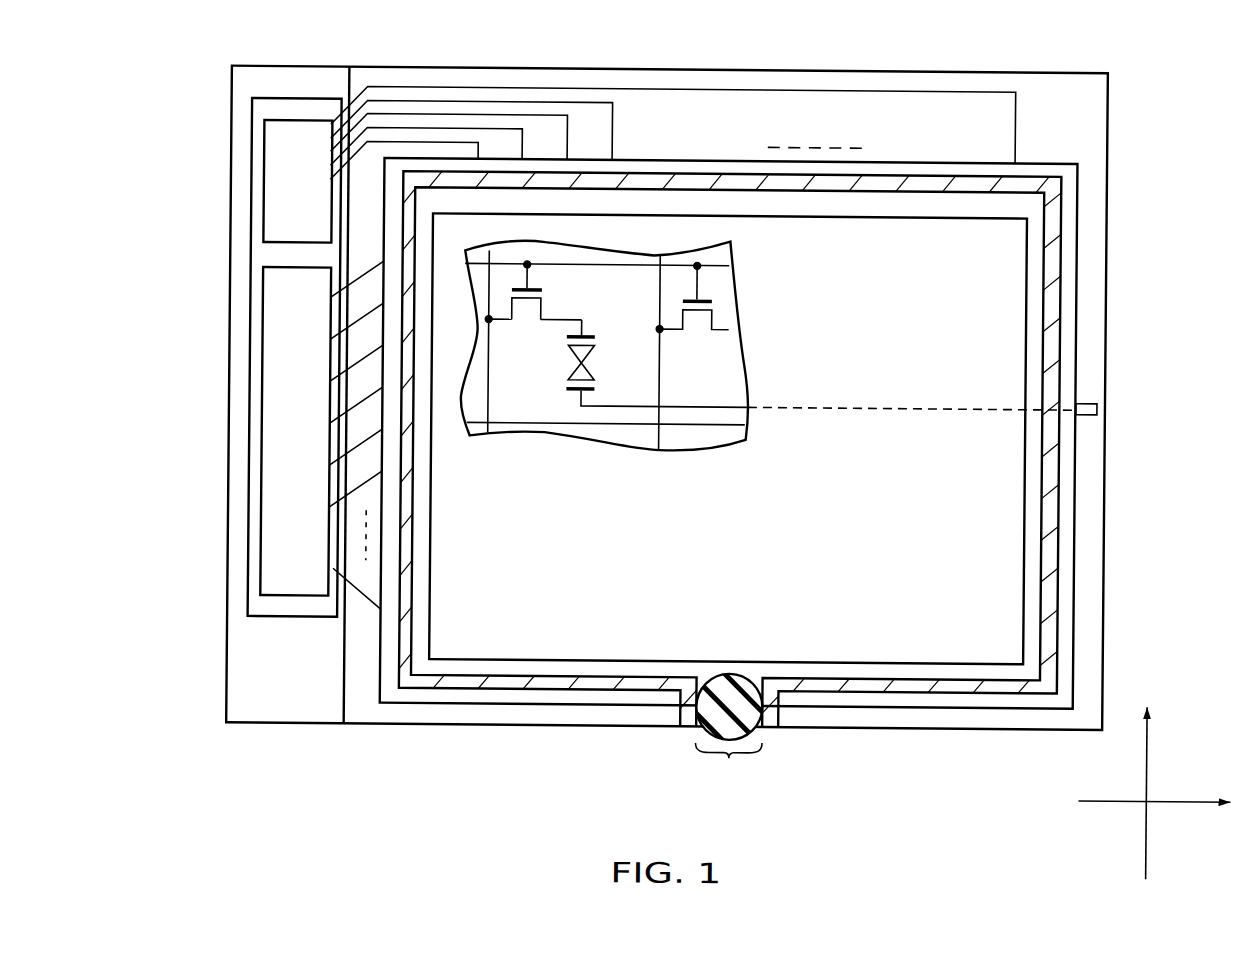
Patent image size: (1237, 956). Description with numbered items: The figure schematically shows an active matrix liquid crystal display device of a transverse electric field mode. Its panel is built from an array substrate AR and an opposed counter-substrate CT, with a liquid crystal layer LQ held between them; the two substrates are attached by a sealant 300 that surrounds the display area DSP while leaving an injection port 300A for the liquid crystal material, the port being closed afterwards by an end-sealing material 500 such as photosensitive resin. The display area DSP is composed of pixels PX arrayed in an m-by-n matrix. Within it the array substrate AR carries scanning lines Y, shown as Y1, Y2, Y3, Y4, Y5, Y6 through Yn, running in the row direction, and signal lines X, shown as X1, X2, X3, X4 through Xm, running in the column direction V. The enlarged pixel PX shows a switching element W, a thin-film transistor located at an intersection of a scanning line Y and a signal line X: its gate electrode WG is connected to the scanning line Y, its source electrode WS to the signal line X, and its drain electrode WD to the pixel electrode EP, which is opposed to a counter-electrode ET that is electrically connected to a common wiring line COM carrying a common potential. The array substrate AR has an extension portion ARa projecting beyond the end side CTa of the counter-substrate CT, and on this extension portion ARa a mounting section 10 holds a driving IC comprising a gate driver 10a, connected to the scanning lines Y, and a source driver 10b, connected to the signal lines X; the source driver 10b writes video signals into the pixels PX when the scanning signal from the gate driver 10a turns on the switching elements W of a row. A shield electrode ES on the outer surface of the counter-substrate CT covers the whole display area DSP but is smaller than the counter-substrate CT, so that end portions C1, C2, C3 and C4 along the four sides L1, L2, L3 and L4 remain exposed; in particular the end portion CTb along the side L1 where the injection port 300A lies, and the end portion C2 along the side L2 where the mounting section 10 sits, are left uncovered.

The array substrate AR is at (271, 726).
The extension portion ARa is at (265, 674).
The counter-substrate CT is at (406, 726).
The end side of the counter-substrate CTa is at (348, 708).
The end portion of the counter-substrate CTb is at (1048, 726).
The mounting section 10 is at (250, 330).
The gate driver 10a is at (262, 462).
The source driver 10b is at (260, 184).
The side of the counter-substrate L3 is at (709, 88).
The signal line X1 is at (421, 155).
The signal line X2 is at (444, 147).
The signal line X3 is at (467, 139).
The signal line X4 is at (490, 132).
The signal line Xm is at (1036, 149).
The scanning line Y1 is at (357, 267).
The scanning line Y2 is at (357, 309).
The scanning line Y3 is at (356, 351).
The scanning line Y4 is at (356, 393).
The scanning line Y5 is at (355, 435).
The scanning line Y6 is at (355, 477).
The scanning line Yn is at (356, 573).
The end portion C1 is at (554, 705).
The end portion C2 is at (376, 679).
The end portion C3 is at (1049, 103).
The end portion C4 is at (1077, 254).
The side of the counter-substrate L1 is at (601, 726).
The side of the counter-substrate L2 is at (346, 651).
The side of the counter-substrate L4 is at (1105, 318).
The sealant 300 is at (991, 680).
The injection port 300A is at (728, 771).
The end-sealing material 500 is at (743, 672).
The shield electrode ES is at (885, 705).
The display area DSP is at (1027, 623).
The common wiring line COM is at (1097, 411).
The column direction V is at (1155, 776).
The pixel PX is at (537, 401).
The signal line X is at (488, 412).
The scanning line Y is at (711, 266).
The switching element W is at (552, 297).
The gate electrode WG is at (529, 274).
The source electrode WS is at (502, 322).
The drain electrode WD is at (544, 323).
The pixel electrode EP is at (584, 333).
The liquid crystal layer LQ is at (590, 371).
The counter-electrode ET is at (572, 394).